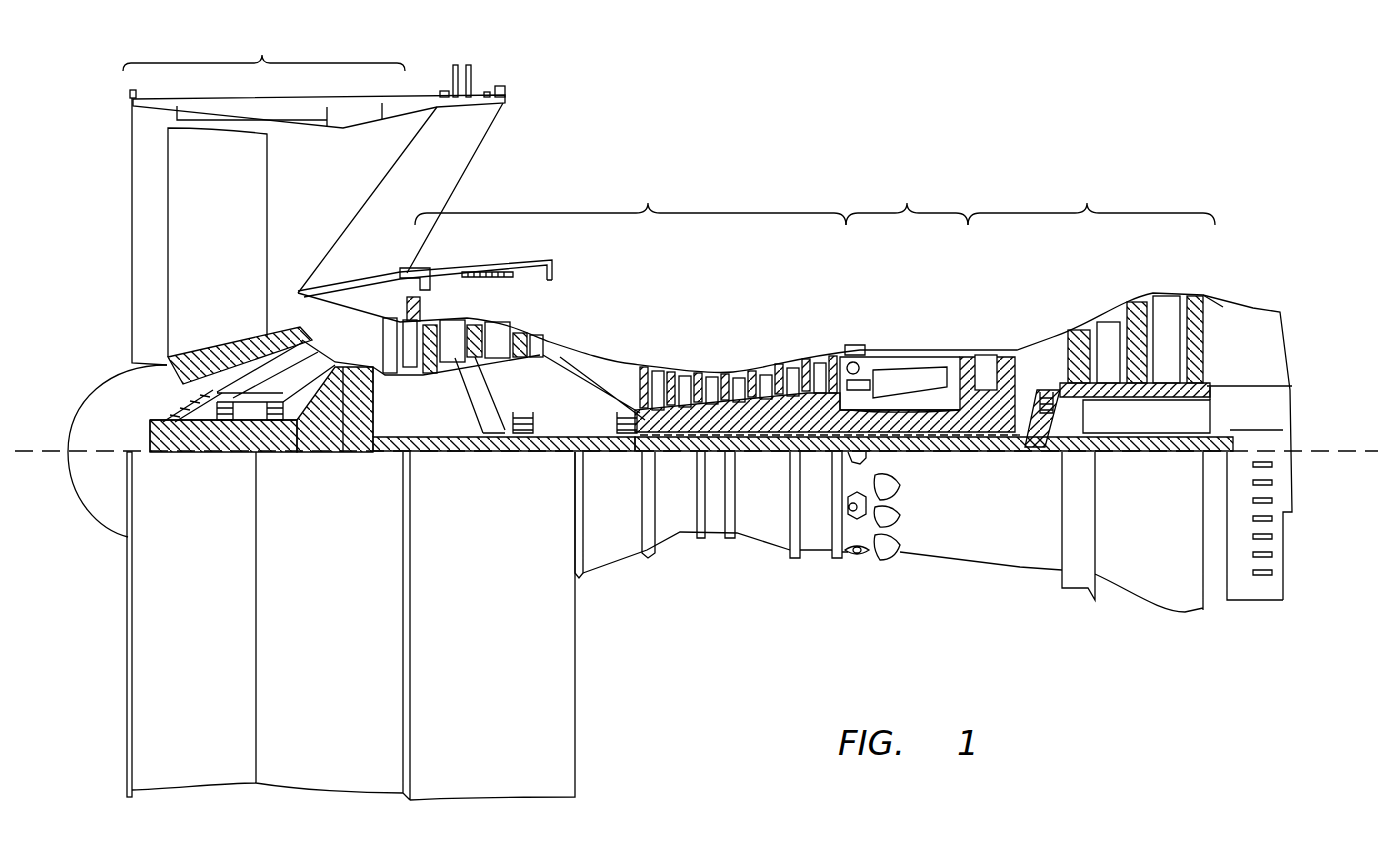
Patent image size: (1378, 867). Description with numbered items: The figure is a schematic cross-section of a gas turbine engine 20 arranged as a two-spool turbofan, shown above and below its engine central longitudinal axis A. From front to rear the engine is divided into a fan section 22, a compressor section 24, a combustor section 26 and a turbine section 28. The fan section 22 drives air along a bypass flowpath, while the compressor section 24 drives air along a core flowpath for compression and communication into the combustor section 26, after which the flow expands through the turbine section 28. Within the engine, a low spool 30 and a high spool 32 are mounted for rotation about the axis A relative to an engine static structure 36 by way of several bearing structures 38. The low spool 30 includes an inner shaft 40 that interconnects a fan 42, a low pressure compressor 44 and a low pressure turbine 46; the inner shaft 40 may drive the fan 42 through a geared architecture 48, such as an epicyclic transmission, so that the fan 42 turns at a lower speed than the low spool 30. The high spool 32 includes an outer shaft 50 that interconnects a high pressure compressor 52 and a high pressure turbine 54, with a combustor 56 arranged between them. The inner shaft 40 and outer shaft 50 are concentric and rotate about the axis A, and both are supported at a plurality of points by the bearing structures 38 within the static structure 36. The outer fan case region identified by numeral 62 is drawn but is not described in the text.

The gas turbine engine 20 is at (950, 139).
The fan section 22 is at (321, 413).
The compressor section 24 is at (630, 199).
The combustor section 26 is at (907, 199).
The turbine section 28 is at (1091, 199).
The low spool 30 is at (767, 458).
The high spool 32 is at (813, 410).
The engine static structure 36 is at (820, 556).
The bearing structures 38 is at (227, 420).
The inner shaft 40 is at (603, 443).
The fan 42 is at (190, 255).
The low pressure compressor 44 is at (494, 338).
The low pressure turbine 46 is at (1140, 307).
The geared architecture 48 is at (353, 427).
The outer shaft 50 is at (910, 447).
The high pressure compressor 52 is at (747, 413).
The high pressure turbine 54 is at (983, 352).
The combustor 56 is at (903, 383).
The fan case 62 is at (407, 108).
The engine central longitudinal axis A is at (1372, 448).